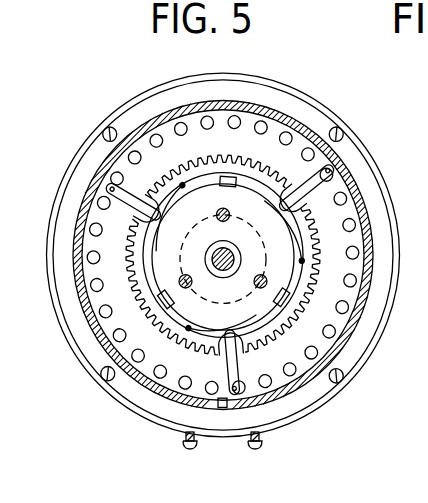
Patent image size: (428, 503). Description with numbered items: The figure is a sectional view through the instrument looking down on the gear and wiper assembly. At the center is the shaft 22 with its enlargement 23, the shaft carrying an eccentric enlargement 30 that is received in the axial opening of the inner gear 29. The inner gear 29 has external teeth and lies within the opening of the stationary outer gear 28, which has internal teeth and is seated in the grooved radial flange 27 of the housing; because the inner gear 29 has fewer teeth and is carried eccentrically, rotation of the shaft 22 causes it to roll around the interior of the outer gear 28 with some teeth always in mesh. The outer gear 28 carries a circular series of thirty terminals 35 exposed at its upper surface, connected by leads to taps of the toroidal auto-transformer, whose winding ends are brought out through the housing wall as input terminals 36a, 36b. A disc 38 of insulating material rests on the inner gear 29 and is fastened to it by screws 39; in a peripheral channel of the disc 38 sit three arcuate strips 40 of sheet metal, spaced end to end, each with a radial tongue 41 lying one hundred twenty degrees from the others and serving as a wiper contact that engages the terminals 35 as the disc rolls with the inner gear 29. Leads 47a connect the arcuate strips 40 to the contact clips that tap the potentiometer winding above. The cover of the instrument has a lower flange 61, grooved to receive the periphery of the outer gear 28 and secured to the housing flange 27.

The shaft 22 is at (262, 238).
The enlargement 23 is at (188, 253).
The radial flange 27 is at (377, 338).
The gear 28 is at (123, 235).
The gear 29 is at (195, 172).
The enlargement 30 is at (221, 292).
The terminals 35 is at (356, 223).
The input terminal 36a is at (190, 447).
The input terminal 36b is at (250, 447).
The disc 38 is at (300, 277).
The screws 39 is at (232, 212).
The arcuate strips 40 is at (203, 184).
The radial tongues 41 is at (110, 192).
The leads 47a is at (233, 173).
The flange 61 is at (353, 352).